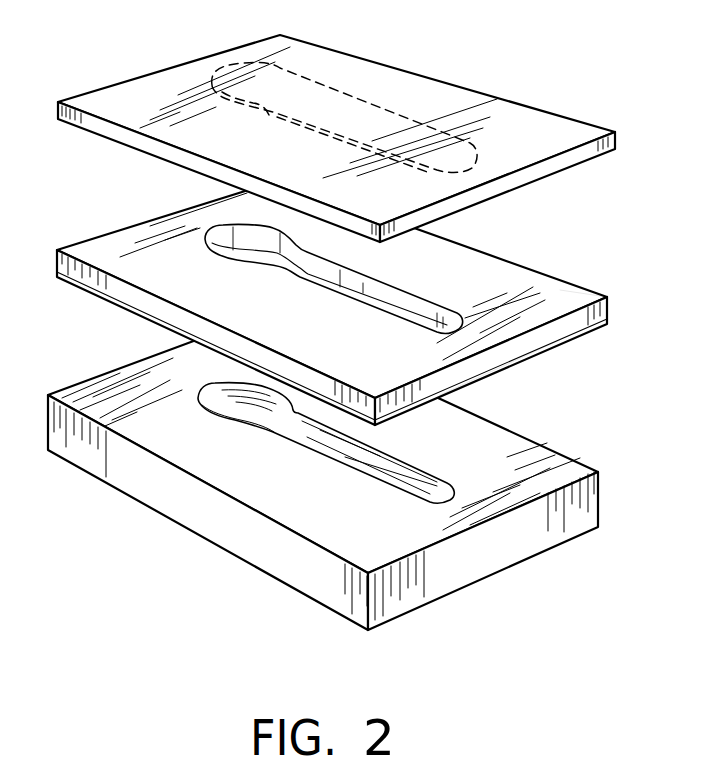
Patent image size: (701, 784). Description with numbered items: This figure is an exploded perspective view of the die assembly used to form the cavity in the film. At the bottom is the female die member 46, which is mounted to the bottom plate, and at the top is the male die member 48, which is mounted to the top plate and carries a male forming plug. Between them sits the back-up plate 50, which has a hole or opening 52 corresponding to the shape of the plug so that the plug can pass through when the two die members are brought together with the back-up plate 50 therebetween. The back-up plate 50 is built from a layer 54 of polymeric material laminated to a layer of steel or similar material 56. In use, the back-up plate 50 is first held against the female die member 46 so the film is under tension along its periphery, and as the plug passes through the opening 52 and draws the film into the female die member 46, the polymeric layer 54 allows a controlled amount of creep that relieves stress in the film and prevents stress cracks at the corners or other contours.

The female die member 46 is at (530, 537).
The male die member 48 is at (600, 129).
The back-up plate 50 is at (374, 302).
The opening 52 is at (404, 304).
The polymeric material layer 54 is at (546, 343).
The steel layer 56 is at (608, 298).